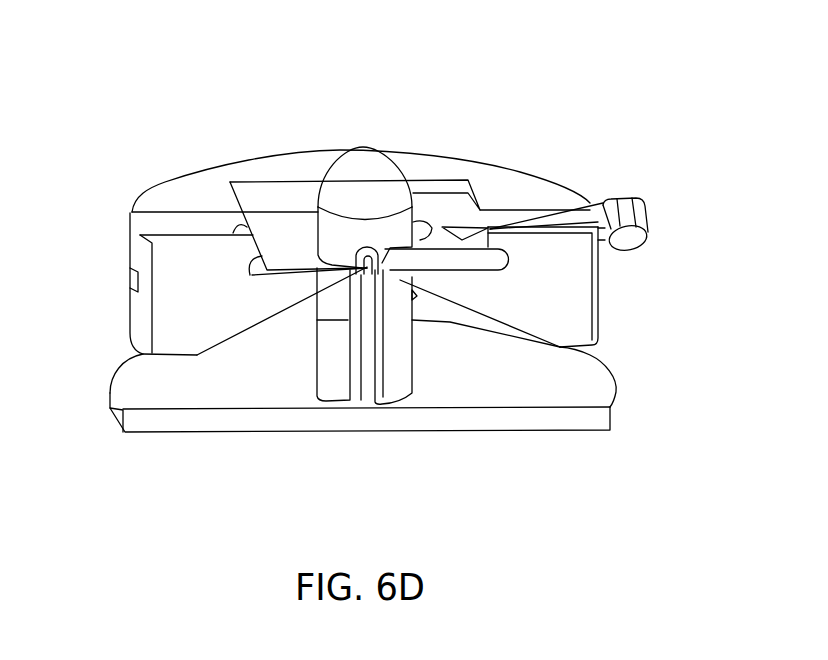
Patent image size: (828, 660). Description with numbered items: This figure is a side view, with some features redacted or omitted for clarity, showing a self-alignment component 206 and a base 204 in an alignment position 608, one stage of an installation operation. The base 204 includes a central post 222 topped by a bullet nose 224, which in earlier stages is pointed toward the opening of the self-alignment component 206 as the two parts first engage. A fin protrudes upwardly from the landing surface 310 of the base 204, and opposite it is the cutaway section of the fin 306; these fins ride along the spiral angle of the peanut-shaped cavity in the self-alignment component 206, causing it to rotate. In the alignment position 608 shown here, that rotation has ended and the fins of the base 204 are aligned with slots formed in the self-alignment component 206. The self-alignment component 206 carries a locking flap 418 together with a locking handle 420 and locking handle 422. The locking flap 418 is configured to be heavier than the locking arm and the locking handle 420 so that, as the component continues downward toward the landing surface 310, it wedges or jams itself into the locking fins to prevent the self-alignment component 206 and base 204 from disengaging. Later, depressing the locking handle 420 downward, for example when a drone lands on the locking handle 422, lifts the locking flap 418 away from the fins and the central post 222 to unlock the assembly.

The alignment position 608 is at (600, 68).
The self-alignment component 206 is at (180, 195).
The base 204 is at (120, 417).
The landing surface 310 is at (238, 380).
The bullet nose 224 is at (366, 162).
The locking flap 418 is at (447, 197).
The locking handle 420 is at (583, 222).
The locking handle 422 is at (620, 212).
The central post 222 is at (402, 360).
The cutaway section of the fin 306 is at (365, 370).